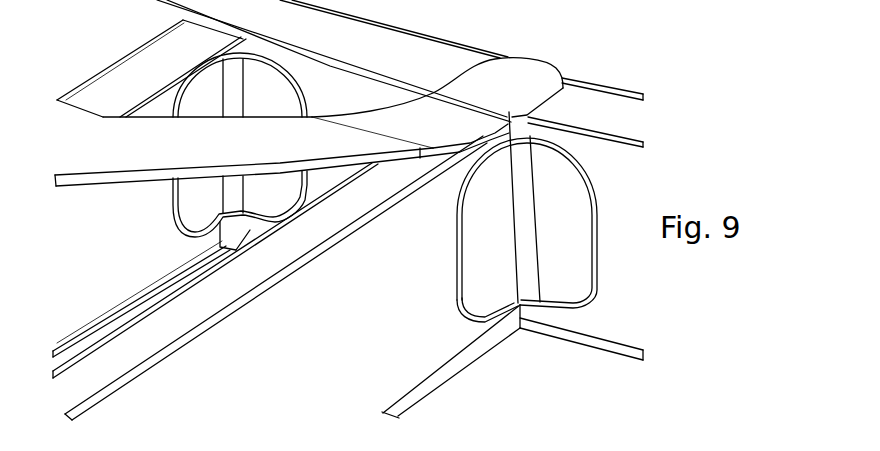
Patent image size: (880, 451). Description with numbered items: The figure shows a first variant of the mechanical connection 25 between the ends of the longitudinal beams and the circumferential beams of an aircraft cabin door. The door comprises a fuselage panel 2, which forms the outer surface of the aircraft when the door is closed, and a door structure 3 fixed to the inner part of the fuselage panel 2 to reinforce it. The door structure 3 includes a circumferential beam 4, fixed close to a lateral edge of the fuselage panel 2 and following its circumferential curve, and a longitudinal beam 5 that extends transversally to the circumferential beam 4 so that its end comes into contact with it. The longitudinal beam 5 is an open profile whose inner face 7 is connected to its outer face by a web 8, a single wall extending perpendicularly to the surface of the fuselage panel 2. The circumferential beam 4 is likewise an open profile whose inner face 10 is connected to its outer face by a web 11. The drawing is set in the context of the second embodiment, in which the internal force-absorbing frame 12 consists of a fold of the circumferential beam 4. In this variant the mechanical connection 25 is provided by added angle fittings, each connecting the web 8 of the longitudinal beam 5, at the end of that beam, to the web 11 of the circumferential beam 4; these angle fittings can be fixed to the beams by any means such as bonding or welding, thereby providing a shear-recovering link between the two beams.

The fuselage panel 2 is at (550, 367).
The door structure 3 is at (453, 43).
The circumferential beam 4 is at (358, 47).
The longitudinal beam 5 is at (198, 37).
The inner face 7 is at (103, 100).
The web 8 is at (83, 262).
The inner face 10 is at (578, 100).
The web 11 is at (357, 100).
The internal force-absorbing frame 12 is at (133, 155).
The mechanical connection 25 is at (267, 98).